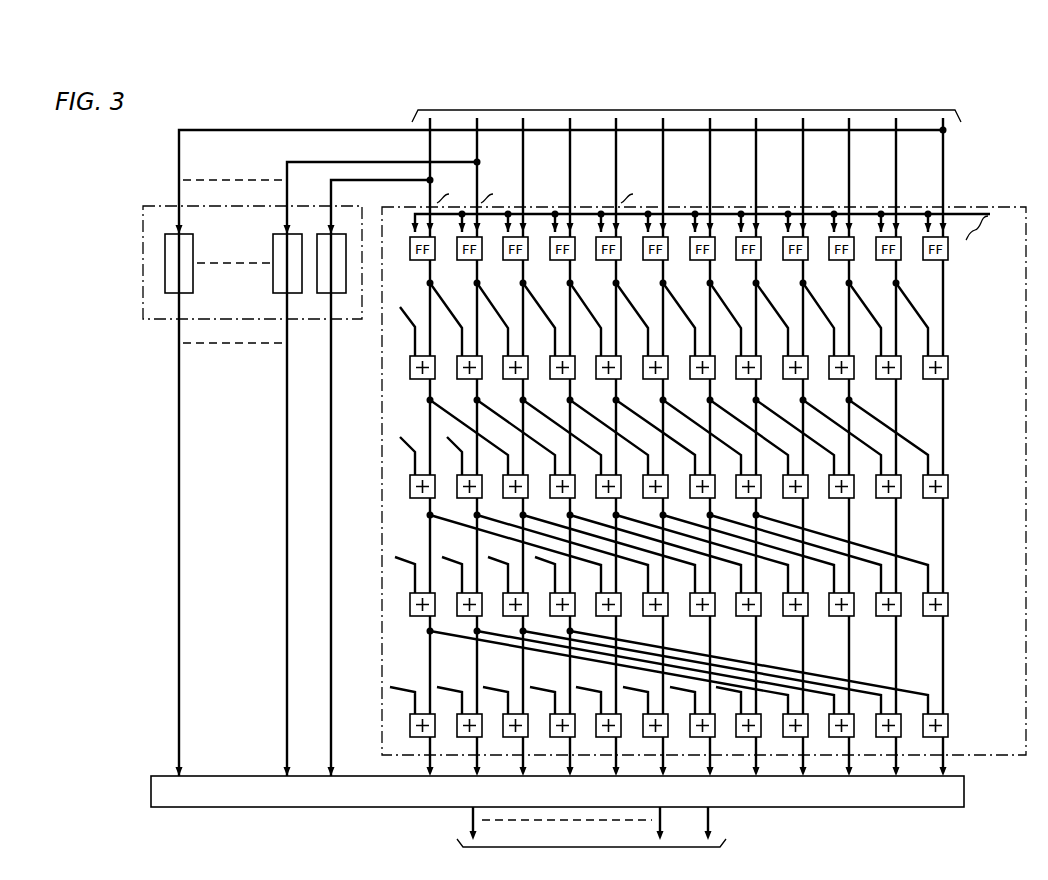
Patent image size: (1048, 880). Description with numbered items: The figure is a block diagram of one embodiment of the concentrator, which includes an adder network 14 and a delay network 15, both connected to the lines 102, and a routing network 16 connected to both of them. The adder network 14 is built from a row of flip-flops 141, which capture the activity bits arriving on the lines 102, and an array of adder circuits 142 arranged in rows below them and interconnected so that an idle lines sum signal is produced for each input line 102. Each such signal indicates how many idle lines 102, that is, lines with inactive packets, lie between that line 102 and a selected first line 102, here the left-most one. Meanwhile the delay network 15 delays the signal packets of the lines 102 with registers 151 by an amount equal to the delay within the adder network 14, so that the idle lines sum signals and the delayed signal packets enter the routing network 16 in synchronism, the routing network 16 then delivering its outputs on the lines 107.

The adder network 14 is at (988, 208).
The delay network 15 is at (164, 208).
The routing network 16 is at (964, 791).
The lines 102 is at (686, 106).
The lines 107 is at (591, 837).
The flip-flops 141 is at (437, 248).
The adder circuits 142 is at (435, 366).
The registers 151 is at (193, 246).